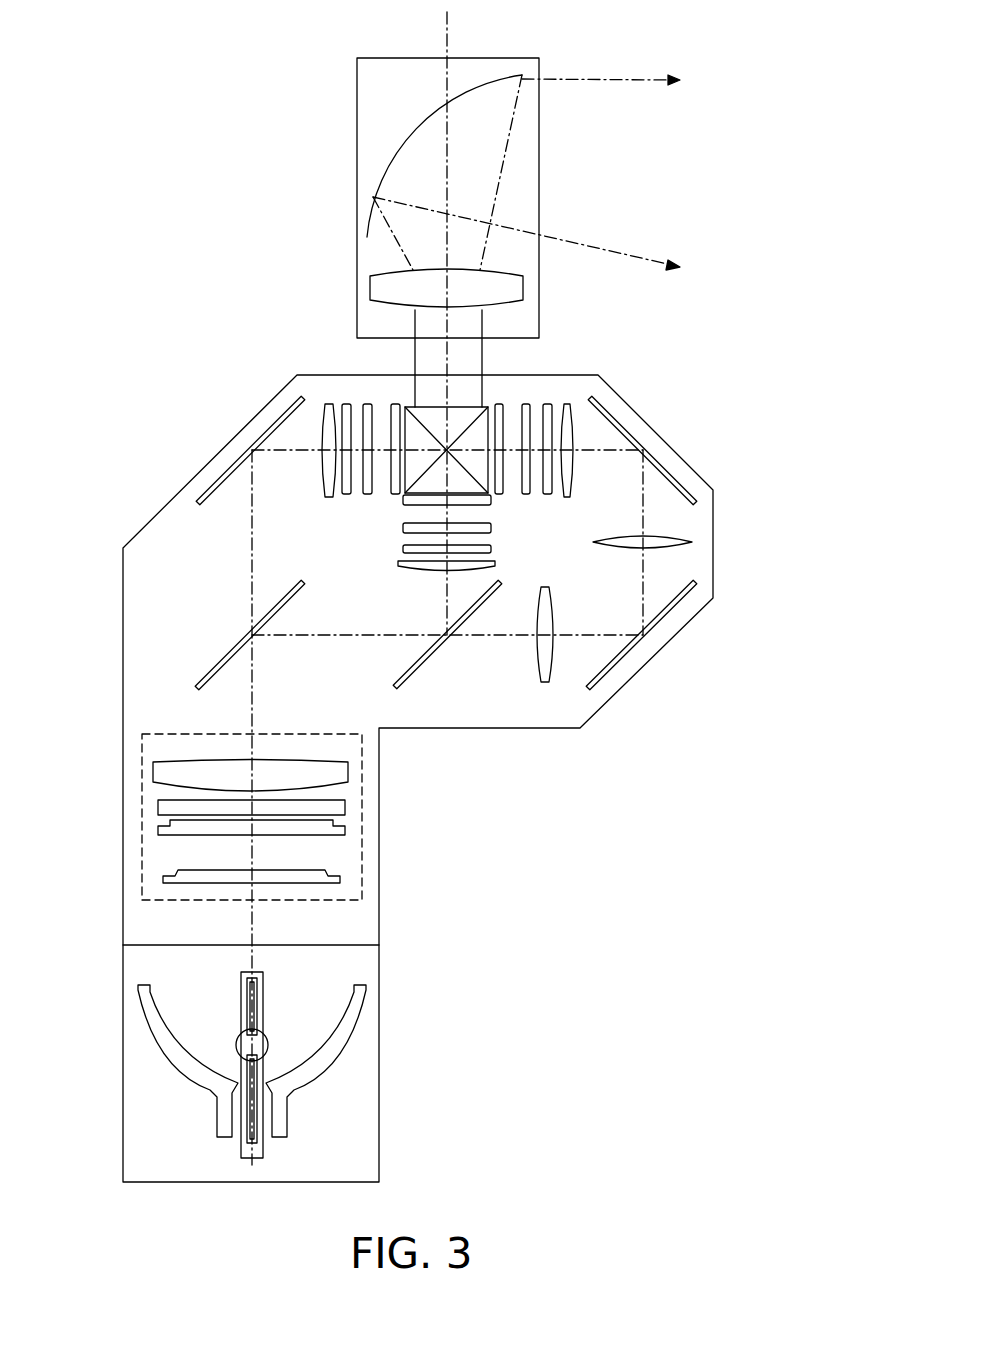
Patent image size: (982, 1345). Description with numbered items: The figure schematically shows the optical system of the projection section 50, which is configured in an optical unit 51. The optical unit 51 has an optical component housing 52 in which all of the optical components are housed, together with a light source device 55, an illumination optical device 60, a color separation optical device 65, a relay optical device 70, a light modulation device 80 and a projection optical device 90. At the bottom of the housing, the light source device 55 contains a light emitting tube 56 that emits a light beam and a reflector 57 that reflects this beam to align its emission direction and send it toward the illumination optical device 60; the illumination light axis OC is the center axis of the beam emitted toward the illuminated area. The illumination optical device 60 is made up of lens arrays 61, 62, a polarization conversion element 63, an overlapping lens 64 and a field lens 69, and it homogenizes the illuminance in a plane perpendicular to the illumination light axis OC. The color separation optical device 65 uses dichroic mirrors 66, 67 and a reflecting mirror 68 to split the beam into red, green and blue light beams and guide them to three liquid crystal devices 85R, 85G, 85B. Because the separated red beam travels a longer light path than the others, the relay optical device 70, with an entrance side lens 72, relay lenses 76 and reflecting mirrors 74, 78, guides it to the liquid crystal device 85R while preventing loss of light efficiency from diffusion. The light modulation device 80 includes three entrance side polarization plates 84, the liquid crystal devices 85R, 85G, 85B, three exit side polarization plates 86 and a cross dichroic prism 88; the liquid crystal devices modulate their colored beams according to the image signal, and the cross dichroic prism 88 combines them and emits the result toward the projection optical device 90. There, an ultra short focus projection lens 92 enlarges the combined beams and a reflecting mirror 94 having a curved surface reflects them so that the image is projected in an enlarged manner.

The projection section 50 is at (155, 78).
The optical unit 51 is at (148, 372).
The optical component housing 52 is at (380, 808).
The light source device 55 is at (392, 1057).
The light emitting tube 56 is at (235, 1040).
The reflector 57 is at (173, 1057).
The illumination optical device 60 is at (363, 862).
The lens array 61 is at (163, 878).
The lens array 62 is at (158, 828).
The polarization conversion element 63 is at (158, 808).
The overlapping lens 64 is at (160, 770).
The color separation optical device 65 is at (160, 572).
The dichroic mirror 66 is at (230, 648).
The dichroic mirror 67 is at (406, 667).
The reflecting mirror 68 is at (230, 468).
The field lens 69 is at (323, 478).
The relay optical device 70 is at (700, 633).
The entrance side lens 72 is at (545, 683).
The reflecting mirror 74 is at (610, 663).
The relay lens 76 is at (692, 542).
The reflecting mirror 78 is at (665, 470).
The light modulation device 80 is at (380, 390).
The entrance side polarization plate 84 is at (346, 496).
The liquid crystal device 85B is at (367, 403).
The liquid crystal device 85G is at (403, 528).
The liquid crystal device 85R is at (527, 410).
The exit side polarization plate 86 is at (499, 415).
The cross dichroic prism 88 is at (455, 420).
The projection optical device 90 is at (325, 108).
The projection lens 92 is at (377, 274).
The reflecting mirror 94 is at (383, 176).
The illumination light axis OC is at (255, 915).